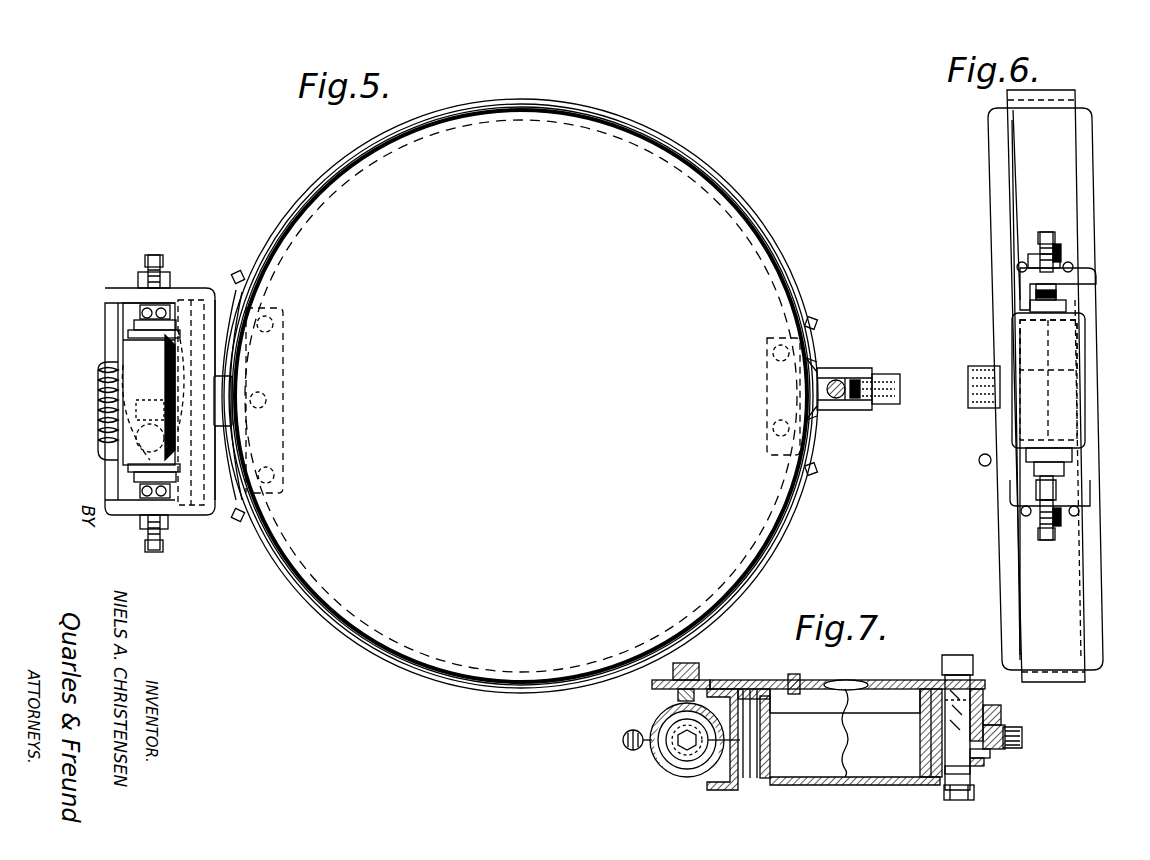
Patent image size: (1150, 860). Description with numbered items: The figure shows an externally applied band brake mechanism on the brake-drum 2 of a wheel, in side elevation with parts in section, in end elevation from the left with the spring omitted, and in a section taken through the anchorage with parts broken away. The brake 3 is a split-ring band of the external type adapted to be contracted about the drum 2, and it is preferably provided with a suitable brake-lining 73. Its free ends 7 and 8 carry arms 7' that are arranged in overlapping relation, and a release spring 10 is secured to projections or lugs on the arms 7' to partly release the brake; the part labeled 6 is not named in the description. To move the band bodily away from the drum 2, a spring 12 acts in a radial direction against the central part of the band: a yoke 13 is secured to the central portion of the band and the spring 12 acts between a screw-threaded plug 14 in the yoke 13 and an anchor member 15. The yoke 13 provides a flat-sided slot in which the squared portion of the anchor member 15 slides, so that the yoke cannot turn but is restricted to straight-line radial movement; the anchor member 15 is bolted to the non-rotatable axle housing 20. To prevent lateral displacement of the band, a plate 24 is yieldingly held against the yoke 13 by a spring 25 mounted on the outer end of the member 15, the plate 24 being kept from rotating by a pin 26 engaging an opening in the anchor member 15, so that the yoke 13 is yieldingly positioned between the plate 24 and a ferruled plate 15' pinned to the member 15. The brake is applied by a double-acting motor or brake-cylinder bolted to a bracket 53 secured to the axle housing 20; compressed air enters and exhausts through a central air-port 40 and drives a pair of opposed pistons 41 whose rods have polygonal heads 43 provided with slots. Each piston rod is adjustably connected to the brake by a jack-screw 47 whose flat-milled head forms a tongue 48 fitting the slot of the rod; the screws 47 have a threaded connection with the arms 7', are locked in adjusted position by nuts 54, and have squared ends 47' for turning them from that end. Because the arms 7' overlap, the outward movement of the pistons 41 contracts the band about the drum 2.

In FIG. 5, the brake-drum 2 is at (521, 396).
In FIG. 6, the brake-drum 2 is at (1003, 580).
In FIG. 7, the brake-drum 2 is at (855, 737).
In FIG. 5, the brake 3 is at (540, 110).
In FIG. 6, the brake 3 is at (1046, 386).
In FIG. 7, the brake 3 is at (920, 735).
In FIG. 5, the clamp body 6 is at (130, 452).
In FIG. 6, the clamp body 6 is at (1012, 343).
In FIG. 7, the clamp body 6 is at (660, 762).
In FIG. 5, the free end of the brake band 7 is at (490, 395).
In FIG. 6, the free end of the brake band 7 is at (991, 205).
In FIG. 5, the arms 7' is at (160, 400).
In FIG. 6, the arms 7' is at (1042, 389).
In FIG. 7, the arms 7' is at (711, 733).
In FIG. 5, the free end of the brake band 8 is at (234, 442).
In FIG. 6, the free end of the brake band 8 is at (1030, 540).
In FIG. 7, the free end of the brake band 8 is at (752, 690).
In FIG. 5, the spring 10 is at (98, 376).
In FIG. 7, the spring 10 is at (622, 745).
In FIG. 5, the spring 12 is at (850, 386).
In FIG. 6, the spring 12 is at (1011, 705).
In FIG. 7, the spring 12 is at (1003, 710).
In FIG. 5, the yoke 13 is at (833, 372).
In FIG. 7, the yoke 13 is at (992, 758).
In FIG. 5, the screw-threaded plug 14 is at (891, 374).
In FIG. 7, the screw-threaded plug 14 is at (1022, 736).
In FIG. 5, the anchor member 15 is at (854, 412).
In FIG. 6, the anchor member 15 is at (994, 534).
In FIG. 7, the anchor member 15 is at (981, 722).
In FIG. 6, the ferruled plate 15' is at (1021, 580).
In FIG. 7, the ferruled plate 15' is at (1004, 695).
In FIG. 5, the axle housing 20 is at (770, 226).
In FIG. 6, the axle housing 20 is at (996, 178).
In FIG. 7, the axle housing 20 is at (840, 676).
In FIG. 7, the plate 24 is at (982, 772).
In FIG. 7, the spring 25 is at (946, 775).
In FIG. 7, the pin 26 is at (978, 766).
In FIG. 5, the central air-port 40 is at (172, 452).
In FIG. 7, the central air-port 40 is at (672, 700).
In FIG. 7, the pistons 41 is at (676, 762).
In FIG. 5, the polygonal heads 43 is at (172, 322).
In FIG. 6, the polygonal heads 43 is at (1066, 302).
In FIG. 5, the adjustable jack-screw 47 is at (141, 434).
In FIG. 6, the adjustable jack-screw 47 is at (1083, 375).
In FIG. 5, the squared ends 47' is at (156, 409).
In FIG. 6, the squared ends 47' is at (1052, 385).
In FIG. 5, the T-shaped member or tongue 48 is at (140, 327).
In FIG. 6, the T-shaped member or tongue 48 is at (1036, 298).
In FIG. 5, the bracket 53 is at (284, 462).
In FIG. 7, the bracket 53 is at (772, 690).
In FIG. 5, the nuts 54 is at (166, 280).
In FIG. 6, the nuts 54 is at (1064, 256).
In FIG. 7, the brake-lining 73 is at (930, 750).